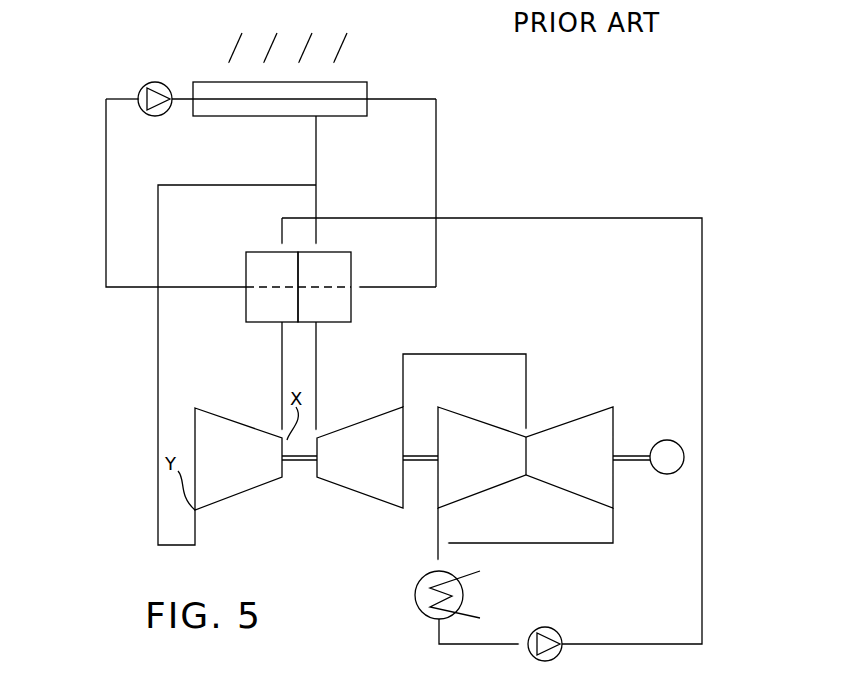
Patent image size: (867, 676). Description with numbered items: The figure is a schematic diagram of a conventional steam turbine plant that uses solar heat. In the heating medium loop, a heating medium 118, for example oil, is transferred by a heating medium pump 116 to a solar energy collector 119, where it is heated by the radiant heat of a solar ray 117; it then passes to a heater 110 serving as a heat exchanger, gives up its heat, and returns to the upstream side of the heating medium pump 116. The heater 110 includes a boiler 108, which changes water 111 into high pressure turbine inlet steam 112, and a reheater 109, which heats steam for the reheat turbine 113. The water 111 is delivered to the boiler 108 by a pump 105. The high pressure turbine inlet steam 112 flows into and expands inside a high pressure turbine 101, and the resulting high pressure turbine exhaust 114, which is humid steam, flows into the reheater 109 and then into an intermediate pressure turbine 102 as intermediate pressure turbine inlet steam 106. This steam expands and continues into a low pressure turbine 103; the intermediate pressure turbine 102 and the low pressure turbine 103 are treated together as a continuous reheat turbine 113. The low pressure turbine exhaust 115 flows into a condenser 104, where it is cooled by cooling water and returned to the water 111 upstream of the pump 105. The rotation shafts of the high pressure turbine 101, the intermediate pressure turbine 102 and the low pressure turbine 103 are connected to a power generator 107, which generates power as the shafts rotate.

The high pressure turbine 101 is at (245, 495).
The intermediate pressure turbine 102 is at (352, 497).
The low pressure turbine 103 is at (575, 415).
The condenser 104 is at (415, 595).
The pump 105 is at (545, 627).
The intermediate pressure turbine inlet steam 106 is at (318, 380).
The power generator 107 is at (663, 440).
The boiler 108 is at (246, 303).
The reheater 109 is at (330, 322).
The heater 110 is at (203, 250).
The water 111 is at (580, 217).
The high pressure turbine inlet steam 112 is at (282, 390).
The reheat turbine 113 is at (542, 405).
The high pressure turbine exhaust 114 is at (158, 497).
The low pressure turbine exhaust 115 is at (438, 520).
The heating medium pump 116 is at (158, 82).
The solar ray 117 is at (362, 50).
The heating medium 118 is at (106, 173).
The solar energy collector 119 is at (296, 116).